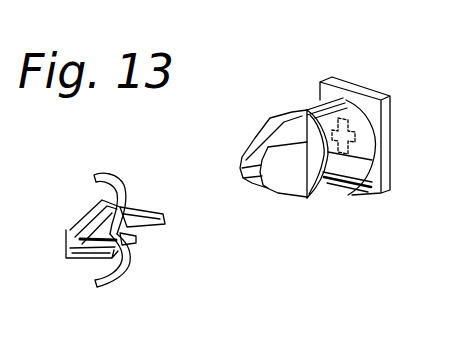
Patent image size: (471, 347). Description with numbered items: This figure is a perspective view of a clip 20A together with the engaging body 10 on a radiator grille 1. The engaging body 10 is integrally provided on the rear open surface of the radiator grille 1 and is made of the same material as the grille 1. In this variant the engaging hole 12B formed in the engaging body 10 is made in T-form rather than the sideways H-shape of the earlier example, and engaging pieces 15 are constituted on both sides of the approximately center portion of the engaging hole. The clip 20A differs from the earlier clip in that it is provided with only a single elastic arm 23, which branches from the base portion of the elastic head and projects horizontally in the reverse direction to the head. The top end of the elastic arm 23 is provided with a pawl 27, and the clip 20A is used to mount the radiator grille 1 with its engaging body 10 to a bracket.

The radiator grille 1 is at (383, 97).
The engaging body 10 is at (284, 211).
The engaging hole 12B is at (342, 118).
The engaging piece 15 is at (372, 160).
The clip 20A is at (79, 271).
The elastic arm 23 is at (137, 240).
The pawl 27 is at (140, 204).